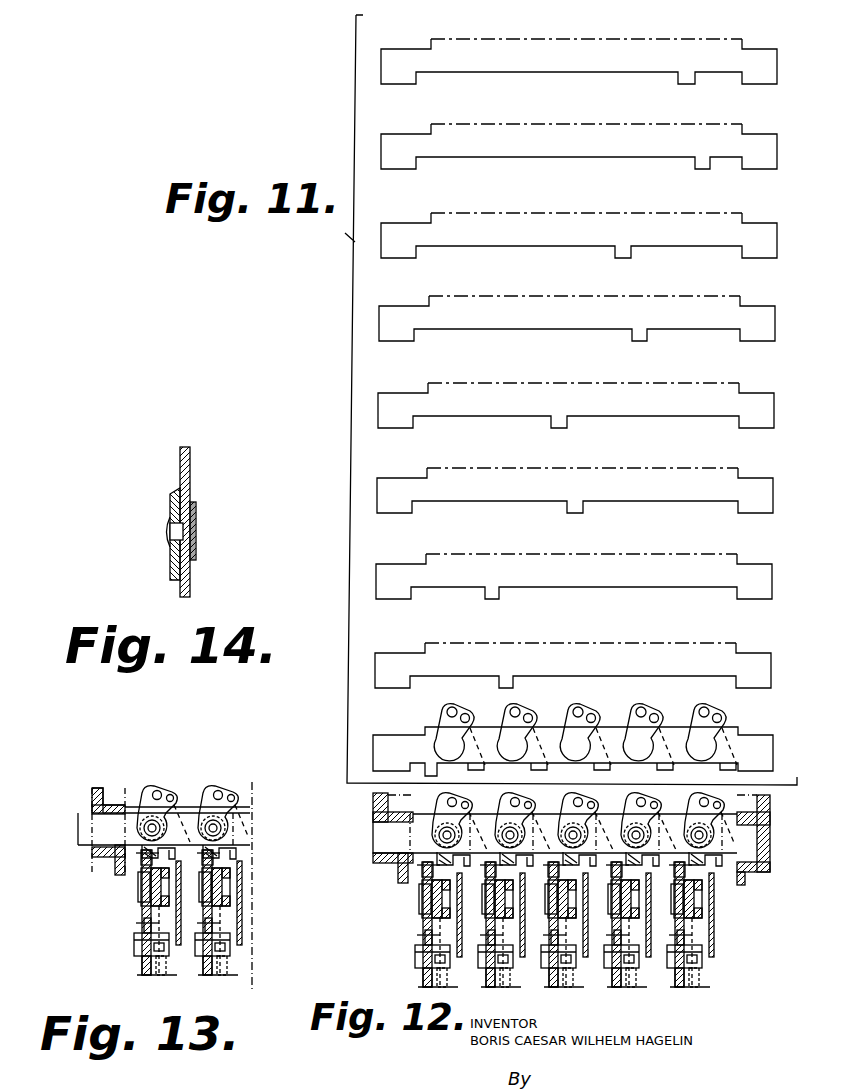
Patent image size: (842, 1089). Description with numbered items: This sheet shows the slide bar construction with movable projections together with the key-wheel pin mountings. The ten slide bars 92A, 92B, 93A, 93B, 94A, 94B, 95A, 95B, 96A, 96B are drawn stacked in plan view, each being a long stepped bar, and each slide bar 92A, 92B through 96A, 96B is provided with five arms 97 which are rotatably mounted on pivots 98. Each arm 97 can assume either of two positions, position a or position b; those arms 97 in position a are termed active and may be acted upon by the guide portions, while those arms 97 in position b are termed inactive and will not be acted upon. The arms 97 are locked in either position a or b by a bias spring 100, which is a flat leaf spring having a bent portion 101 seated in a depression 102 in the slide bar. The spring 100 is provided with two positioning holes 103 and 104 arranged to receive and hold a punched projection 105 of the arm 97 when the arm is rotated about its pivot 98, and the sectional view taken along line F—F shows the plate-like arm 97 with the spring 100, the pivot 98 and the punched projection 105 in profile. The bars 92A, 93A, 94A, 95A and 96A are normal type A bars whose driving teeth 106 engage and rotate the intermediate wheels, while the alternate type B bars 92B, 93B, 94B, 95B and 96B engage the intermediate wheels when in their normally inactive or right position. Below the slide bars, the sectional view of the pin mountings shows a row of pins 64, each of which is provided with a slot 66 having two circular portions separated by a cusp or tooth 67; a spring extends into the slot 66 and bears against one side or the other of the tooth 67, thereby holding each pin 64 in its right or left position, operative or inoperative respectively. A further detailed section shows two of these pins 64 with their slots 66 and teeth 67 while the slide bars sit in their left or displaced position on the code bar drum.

In FIG. 11, the slide bar 96B is at (388, 49).
In FIG. 11, the slide bar 96A is at (388, 134).
In FIG. 11, the slide bar 95B is at (388, 223).
In FIG. 11, the slide bar 95A is at (390, 299).
In FIG. 11, the slide bar 94B is at (392, 385).
In FIG. 11, the slide bar 94A is at (394, 470).
In FIG. 11, the slide bar 93B is at (396, 556).
In FIG. 11, the slide bar 93A is at (396, 645).
In FIG. 11, the slide bar 92B is at (395, 726).
In FIG. 12, the slide bar 92A is at (373, 848).
In FIG. 11, the driving teeth 106 is at (500, 592).
In FIG. 11, the positioning hole 104 is at (582, 712).
In FIG. 11, the positioning hole 103 is at (729, 718).
In FIG. 11, the arm 97 is at (600, 773).
In FIG. 14, the arm 97 is at (188, 585).
In FIG. 14, the pivot 98 is at (186, 532).
In FIG. 14, the bias spring 100 is at (173, 490).
In FIG. 14, the punched projection 105 is at (182, 468).
In FIG. 12, the bent portion 101 is at (451, 829).
In FIG. 12, the depression 102 is at (701, 829).
In FIG. 12, the slot 66 is at (420, 953).
In FIG. 12, the pin 64 is at (712, 960).
In FIG. 13, the pin 64 is at (138, 951).
In FIG. 13, the cusp or tooth 67 is at (215, 958).
In FIG. 11, the active position a is at (463, 779).
In FIG. 11, the inactive position b is at (516, 779).
In FIG. 13, the section line F— F is at (177, 800).